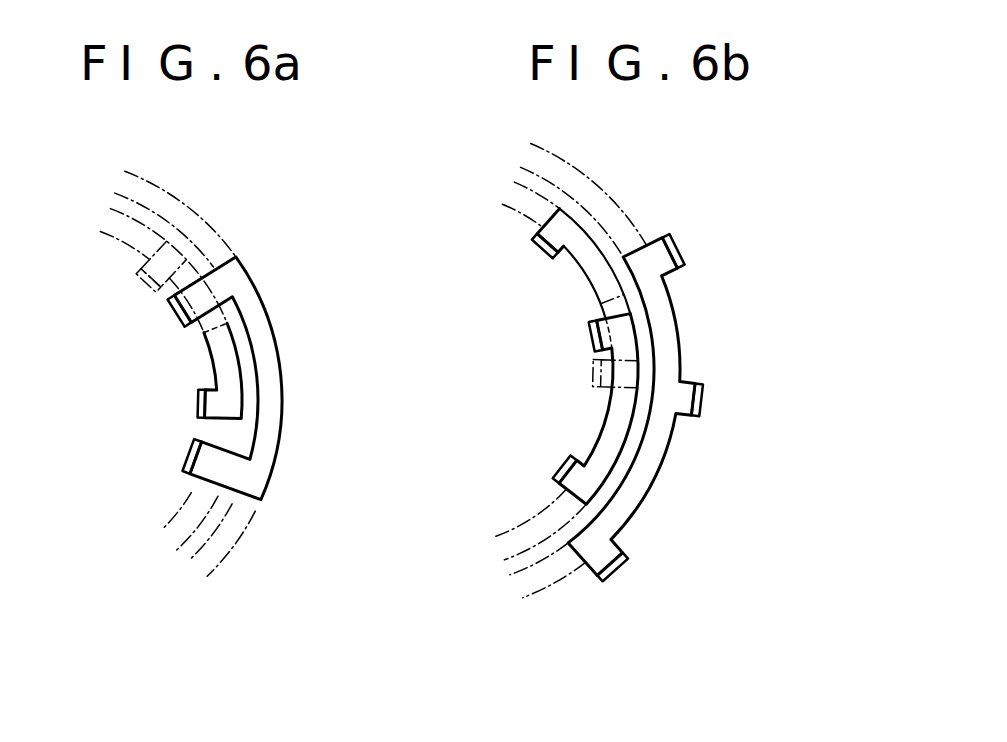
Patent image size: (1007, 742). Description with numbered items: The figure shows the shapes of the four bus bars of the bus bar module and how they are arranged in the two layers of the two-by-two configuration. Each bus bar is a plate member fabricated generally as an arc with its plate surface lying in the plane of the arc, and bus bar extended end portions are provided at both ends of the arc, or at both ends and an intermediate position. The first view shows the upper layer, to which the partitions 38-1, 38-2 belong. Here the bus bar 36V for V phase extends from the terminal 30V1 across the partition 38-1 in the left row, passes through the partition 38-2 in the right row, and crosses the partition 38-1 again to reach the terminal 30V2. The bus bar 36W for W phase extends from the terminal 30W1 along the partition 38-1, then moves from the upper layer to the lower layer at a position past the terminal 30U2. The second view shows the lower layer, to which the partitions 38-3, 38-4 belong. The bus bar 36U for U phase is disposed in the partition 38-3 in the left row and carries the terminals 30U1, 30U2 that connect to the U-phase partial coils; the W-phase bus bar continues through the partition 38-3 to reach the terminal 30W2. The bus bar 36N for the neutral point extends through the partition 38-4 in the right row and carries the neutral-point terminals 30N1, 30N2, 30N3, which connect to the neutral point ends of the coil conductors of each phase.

In FIG. 6A, the bus bar extended end portion 30V2 is at (178, 311).
In FIG. 6A, the bus bar extended end portion 30V1 is at (184, 456).
In FIG. 6A, the bus bar extended end portion 30W1 is at (198, 404).
In FIG. 6A, the bus bar 36V is at (268, 386).
In FIG. 6A, the bus bar 36W is at (214, 361).
In FIG. 6A, the partition 38-1 is at (173, 554).
In FIG. 6A, the partition 38-2 is at (205, 590).
In FIG. 6B, the bus bar extended end portion 30W2 is at (540, 250).
In FIG. 6B, the bus bar extended end portion 30U2 is at (590, 337).
In FIG. 6B, the bus bar extended end portion 30U1 is at (556, 470).
In FIG. 6B, the bus bar 36U is at (613, 428).
In FIG. 6B, the bus bar 36N is at (667, 342).
In FIG. 6B, the terminal 30N3 is at (678, 250).
In FIG. 6B, the terminal 30N2 is at (703, 402).
In FIG. 6B, the terminal 30N1 is at (605, 578).
In FIG. 6B, the partition 38-3 is at (510, 568).
In FIG. 6B, the partition 38-4 is at (521, 604).